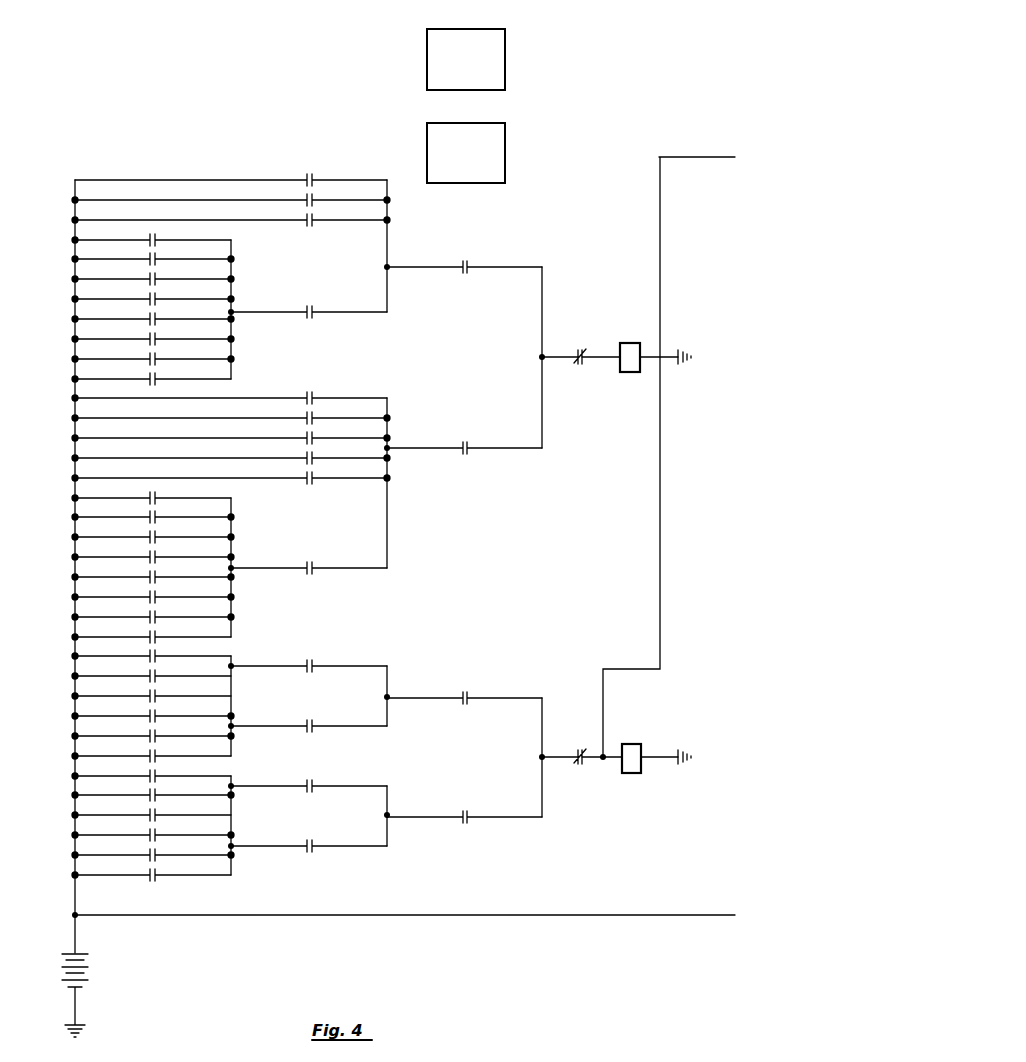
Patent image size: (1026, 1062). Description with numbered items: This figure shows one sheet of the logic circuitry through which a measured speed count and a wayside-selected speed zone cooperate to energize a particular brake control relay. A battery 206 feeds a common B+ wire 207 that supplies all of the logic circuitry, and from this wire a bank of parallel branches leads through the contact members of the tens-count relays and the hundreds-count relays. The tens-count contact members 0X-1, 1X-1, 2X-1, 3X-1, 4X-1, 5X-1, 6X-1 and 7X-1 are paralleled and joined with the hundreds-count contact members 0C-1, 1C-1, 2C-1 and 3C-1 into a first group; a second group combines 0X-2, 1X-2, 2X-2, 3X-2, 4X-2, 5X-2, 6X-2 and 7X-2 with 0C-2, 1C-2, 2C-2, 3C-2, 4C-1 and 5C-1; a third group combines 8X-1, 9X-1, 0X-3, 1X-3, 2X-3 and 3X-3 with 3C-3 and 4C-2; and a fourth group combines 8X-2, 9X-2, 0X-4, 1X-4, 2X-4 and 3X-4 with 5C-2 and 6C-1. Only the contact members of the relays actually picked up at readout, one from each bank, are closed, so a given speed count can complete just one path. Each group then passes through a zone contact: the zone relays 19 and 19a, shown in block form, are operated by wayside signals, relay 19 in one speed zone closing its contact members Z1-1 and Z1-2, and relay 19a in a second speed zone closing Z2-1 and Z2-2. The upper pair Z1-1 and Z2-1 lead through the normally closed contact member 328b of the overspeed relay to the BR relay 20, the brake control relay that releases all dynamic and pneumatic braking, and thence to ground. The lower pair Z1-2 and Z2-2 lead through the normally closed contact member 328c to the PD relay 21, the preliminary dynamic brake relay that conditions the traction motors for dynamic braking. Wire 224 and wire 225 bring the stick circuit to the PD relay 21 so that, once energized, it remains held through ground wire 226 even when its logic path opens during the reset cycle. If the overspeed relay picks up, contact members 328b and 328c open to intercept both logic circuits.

The zone relay 19 is at (505, 35).
The zone relay 19a is at (505, 129).
The brake control relay (BR relay) 20 is at (628, 368).
The brake control relay (P.D. relay) 21 is at (634, 766).
The battery 206 is at (87, 961).
The common B+ wire 207 is at (688, 915).
The wire 224 is at (688, 157).
The wire 225 is at (613, 762).
The ground wire 226 is at (664, 757).
The normally closed contact member of overspeed relay 328b is at (582, 349).
The normally closed contact member of overspeed relay 328c is at (582, 749).
The BR relay BR is at (628, 331).
The P.D. relay PD is at (628, 729).
The contact member of zone relay 19 Z1-1 is at (468, 262).
The contact member of zone relay 19a Z2-1 is at (468, 443).
The contact member of zone relay 19 Z1-2 is at (468, 693).
The contact member of zone relay 19a Z2-2 is at (468, 812).
The contact member of relay 0C 0C-1 is at (313, 175).
The contact member of relay 1C 1C-1 is at (313, 195).
The contact member of relay 2C 2C-1 is at (313, 215).
The contact member of relay 3C 3C-1 is at (313, 307).
The contact member of relay 0C 0C-2 is at (313, 393).
The contact member of relay 1C 1C-2 is at (313, 413).
The contact member of relay 2C 2C-2 is at (313, 433).
The contact member of relay 3C 3C-2 is at (313, 453).
The contact member of relay 4C 4C-1 is at (313, 473).
The contact member of relay 5C 5C-1 is at (313, 563).
The contact member of relay 3C 3C-3 is at (313, 661).
The contact member of relay 4C 4C-2 is at (313, 721).
The contact member of relay 5C 5C-2 is at (313, 781).
The contact member of relay 6C 6C-1 is at (313, 841).
The contact member of relay 0X 0X-1 is at (156, 235).
The contact member of relay 1X 1X-1 is at (156, 254).
The contact member of relay 2X 2X-1 is at (156, 274).
The contact member of relay 3X 3X-1 is at (156, 294).
The contact member of relay 4X 4X-1 is at (156, 314).
The contact member of relay 5X 5X-1 is at (156, 334).
The contact member of relay 6X 6X-1 is at (156, 354).
The contact member of relay 7X 7X-1 is at (156, 374).
The contact member of relay 0X 0X-2 is at (156, 493).
The contact member of relay 1X 1X-2 is at (156, 512).
The contact member of relay 2X 2X-2 is at (156, 532).
The contact member of relay 3X 3X-2 is at (156, 552).
The contact member of relay 4X 4X-2 is at (156, 572).
The contact member of relay 5X 5X-2 is at (156, 592).
The contact member of relay 6X 6X-2 is at (156, 612).
The contact member of relay 7X 7X-2 is at (156, 632).
The contact member of relay 8X 8X-1 is at (156, 651).
The contact member of relay 9X 9X-1 is at (156, 671).
The contact member of relay 0X 0X-3 is at (156, 691).
The contact member of relay 1X 1X-3 is at (156, 711).
The contact member of relay 2X 2X-3 is at (156, 731).
The contact member of relay 3X 3X-3 is at (156, 751).
The contact member of relay 8X 8X-2 is at (156, 771).
The contact member of relay 9X 9X-2 is at (156, 790).
The contact member of relay 0X 0X-4 is at (156, 810).
The contact member of relay 1X 1X-4 is at (156, 830).
The contact member of relay 2X 2X-4 is at (156, 850).
The contact member of relay 3X 3X-4 is at (156, 870).